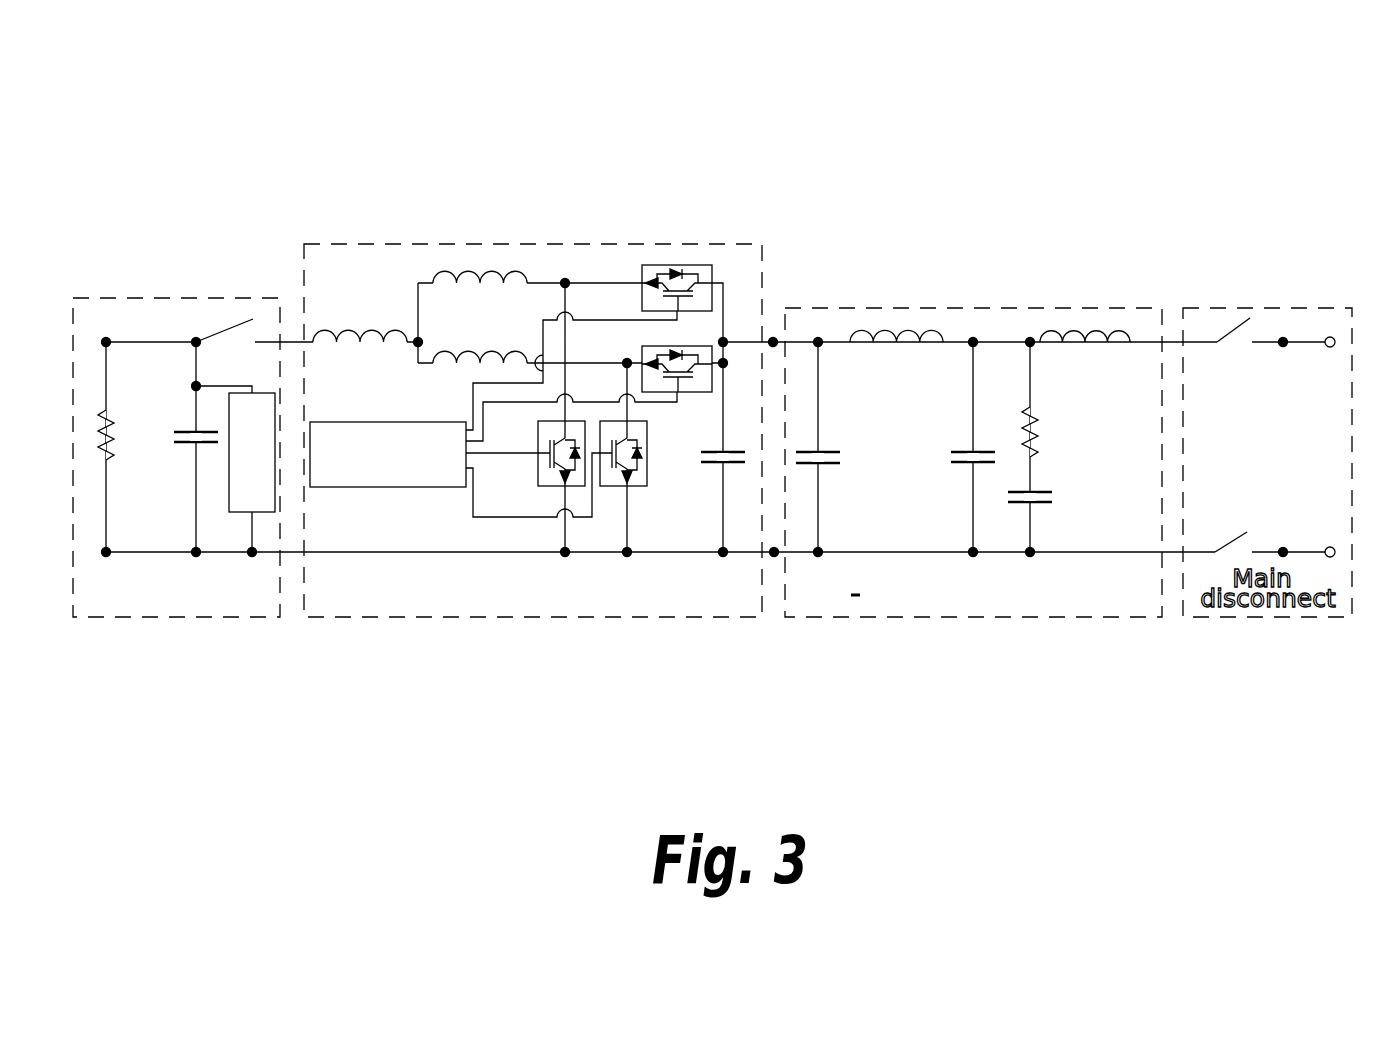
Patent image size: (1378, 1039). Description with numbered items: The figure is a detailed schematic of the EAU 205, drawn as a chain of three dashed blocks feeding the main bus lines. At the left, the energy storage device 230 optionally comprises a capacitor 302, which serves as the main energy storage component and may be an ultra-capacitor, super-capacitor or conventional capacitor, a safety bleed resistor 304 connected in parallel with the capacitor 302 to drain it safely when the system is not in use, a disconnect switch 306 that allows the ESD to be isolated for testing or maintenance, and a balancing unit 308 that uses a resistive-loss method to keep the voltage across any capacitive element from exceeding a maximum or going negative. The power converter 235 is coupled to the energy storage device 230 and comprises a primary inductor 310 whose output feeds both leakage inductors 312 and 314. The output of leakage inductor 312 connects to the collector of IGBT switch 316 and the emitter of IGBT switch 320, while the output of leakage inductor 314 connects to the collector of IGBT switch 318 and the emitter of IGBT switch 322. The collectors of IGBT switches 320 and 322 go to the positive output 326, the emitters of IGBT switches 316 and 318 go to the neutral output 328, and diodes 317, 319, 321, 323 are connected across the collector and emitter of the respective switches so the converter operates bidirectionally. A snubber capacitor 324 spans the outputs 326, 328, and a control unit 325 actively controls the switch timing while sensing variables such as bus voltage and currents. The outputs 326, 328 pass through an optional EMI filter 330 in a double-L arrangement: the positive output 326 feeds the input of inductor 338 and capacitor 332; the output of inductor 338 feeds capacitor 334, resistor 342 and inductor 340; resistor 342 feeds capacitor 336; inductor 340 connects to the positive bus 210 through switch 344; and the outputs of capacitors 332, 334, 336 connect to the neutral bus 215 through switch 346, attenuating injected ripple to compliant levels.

The EAU 205 is at (806, 108).
The +270V bus 210 is at (1330, 337).
The neutral bus 215 is at (1330, 547).
The energy storage device 230 is at (240, 617).
The power converter 235 is at (590, 243).
The capacitor 302 is at (185, 443).
The safety bleed resistor 304 is at (110, 427).
The disconnect switch 306 is at (207, 302).
The balancing unit 308 is at (237, 513).
The primary inductor 310 is at (348, 330).
The leakage inductor 312 is at (468, 273).
The leakage inductor 314 is at (473, 358).
The IGBT switch 316 is at (537, 462).
The diode 317 is at (580, 487).
The IGBT switch 318 is at (648, 488).
The diode 319 is at (652, 455).
The IGBT switch 320 is at (650, 265).
The diode 321 is at (680, 272).
The IGBT switch 322 is at (643, 350).
The diode 323 is at (678, 348).
The snubber capacitor 324 is at (713, 450).
The control unit 325 is at (330, 418).
The positive output 326 is at (773, 342).
The neutral output 328 is at (774, 556).
The EMI filter 330 is at (992, 307).
The capacitor 332 is at (837, 463).
The capacitor 334 is at (953, 450).
The capacitor 336 is at (1038, 492).
The inductor 338 is at (883, 328).
The inductor 340 is at (1098, 330).
The resistor 342 is at (1038, 417).
The switch 344 is at (1233, 330).
The switch 346 is at (1245, 532).